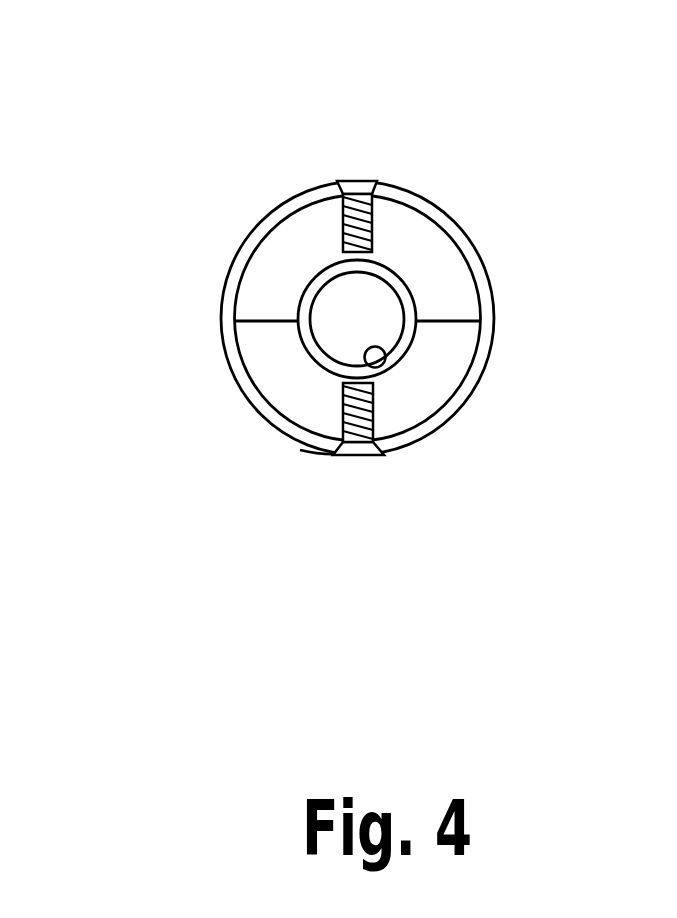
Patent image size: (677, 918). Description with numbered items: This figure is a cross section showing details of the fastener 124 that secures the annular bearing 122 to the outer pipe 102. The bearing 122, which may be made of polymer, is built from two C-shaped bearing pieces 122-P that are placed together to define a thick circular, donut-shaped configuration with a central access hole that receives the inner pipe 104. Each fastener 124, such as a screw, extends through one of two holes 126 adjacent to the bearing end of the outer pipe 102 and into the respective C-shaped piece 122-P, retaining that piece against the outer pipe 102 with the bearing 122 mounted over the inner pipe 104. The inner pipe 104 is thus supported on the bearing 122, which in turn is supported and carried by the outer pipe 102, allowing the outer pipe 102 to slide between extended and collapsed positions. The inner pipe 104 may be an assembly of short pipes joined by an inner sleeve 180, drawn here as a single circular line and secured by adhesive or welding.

The outer pipe 102 is at (320, 451).
The inner pipe 104 is at (405, 342).
The bearing 122 is at (445, 257).
The C-shaped bearing pieces 122-P is at (290, 262).
The fastener 124 is at (358, 181).
The holes 126 is at (368, 183).
The inner sleeve 180 is at (374, 383).